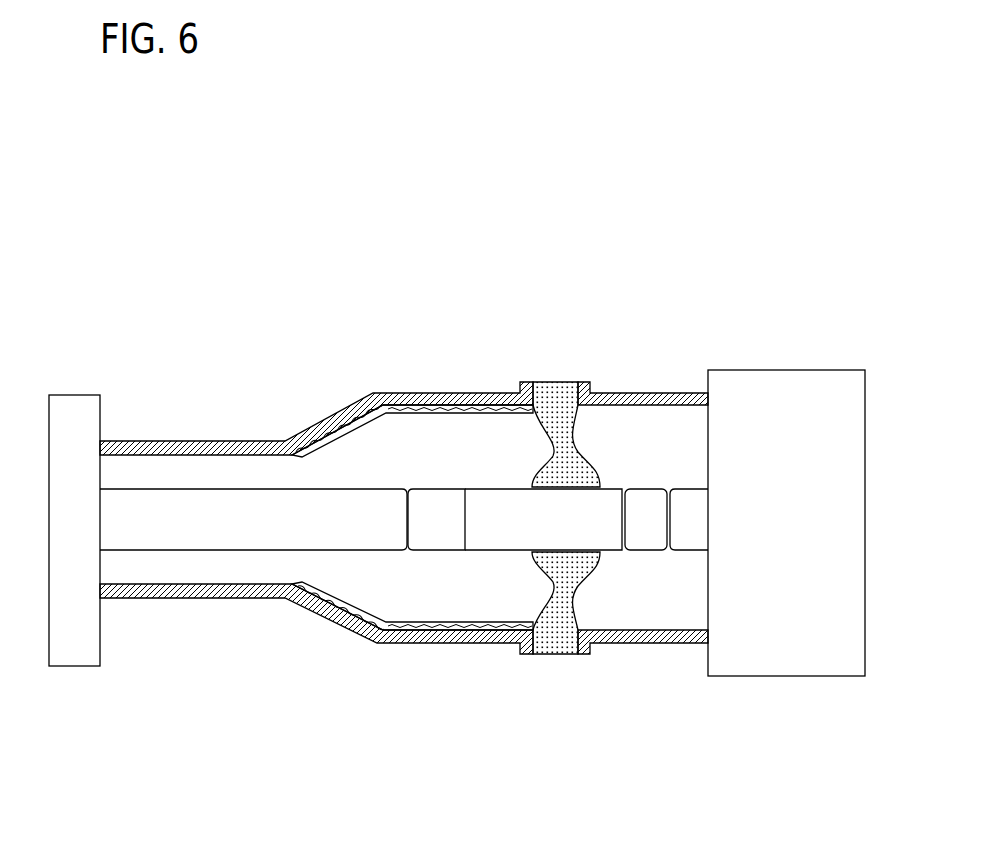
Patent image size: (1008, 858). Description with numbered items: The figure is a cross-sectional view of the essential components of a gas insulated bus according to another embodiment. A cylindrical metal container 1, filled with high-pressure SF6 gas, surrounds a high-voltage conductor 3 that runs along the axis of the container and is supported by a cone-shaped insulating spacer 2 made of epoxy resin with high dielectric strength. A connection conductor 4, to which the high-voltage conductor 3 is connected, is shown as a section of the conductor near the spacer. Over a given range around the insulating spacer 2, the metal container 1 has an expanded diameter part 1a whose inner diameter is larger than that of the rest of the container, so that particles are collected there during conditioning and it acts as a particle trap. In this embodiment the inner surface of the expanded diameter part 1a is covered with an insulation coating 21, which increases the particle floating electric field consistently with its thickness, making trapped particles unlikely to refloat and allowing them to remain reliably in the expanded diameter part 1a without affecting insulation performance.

The metal container 1 is at (404, 495).
The expanded diameter part 1a is at (408, 643).
The insulating spacer 2 is at (565, 393).
The insulation coating 21 is at (375, 393).
The high-voltage conductor 3 is at (195, 515).
The connection conductor 4 is at (436, 503).